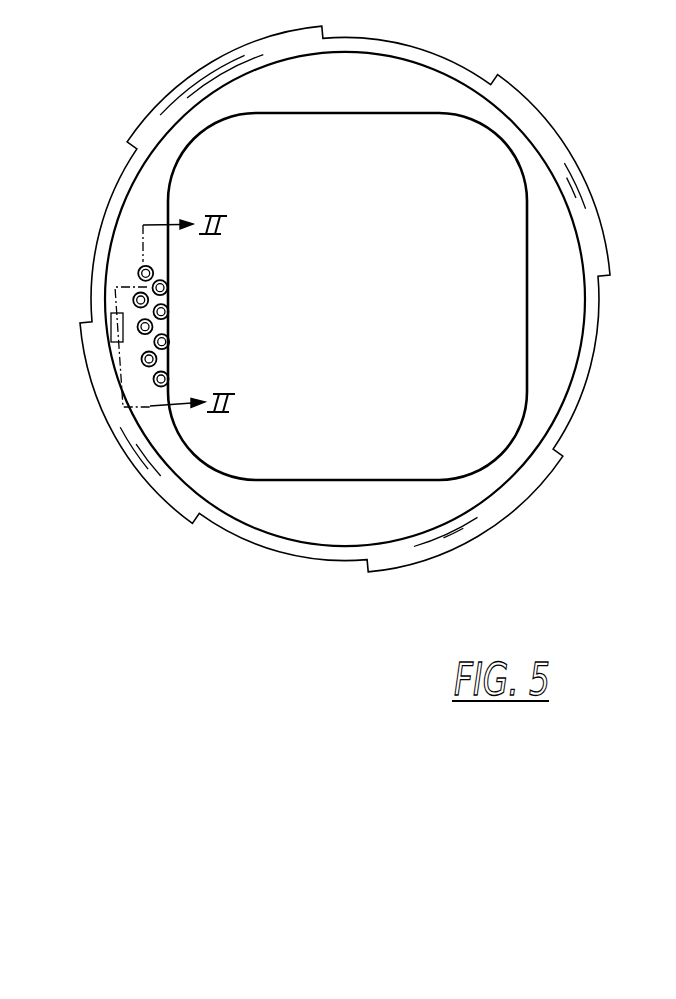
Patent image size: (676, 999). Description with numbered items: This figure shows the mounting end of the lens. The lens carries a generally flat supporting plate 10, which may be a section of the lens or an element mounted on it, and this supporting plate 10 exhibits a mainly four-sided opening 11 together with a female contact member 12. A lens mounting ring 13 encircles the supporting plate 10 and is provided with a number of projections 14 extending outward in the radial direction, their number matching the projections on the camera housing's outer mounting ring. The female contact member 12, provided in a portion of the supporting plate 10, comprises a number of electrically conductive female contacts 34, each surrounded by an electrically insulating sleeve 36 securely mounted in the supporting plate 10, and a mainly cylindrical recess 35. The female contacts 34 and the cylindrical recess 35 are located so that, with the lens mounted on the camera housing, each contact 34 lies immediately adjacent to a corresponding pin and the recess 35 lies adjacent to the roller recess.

The supporting plate 10 is at (388, 68).
The opening 11 is at (435, 127).
The female contact member 12 is at (177, 334).
The lens mounting ring 13 is at (597, 343).
The projections 14 is at (225, 62).
The female contacts 34 is at (170, 283).
The cylindrical recess 35 is at (110, 318).
The insulating sleeves 36 is at (171, 296).